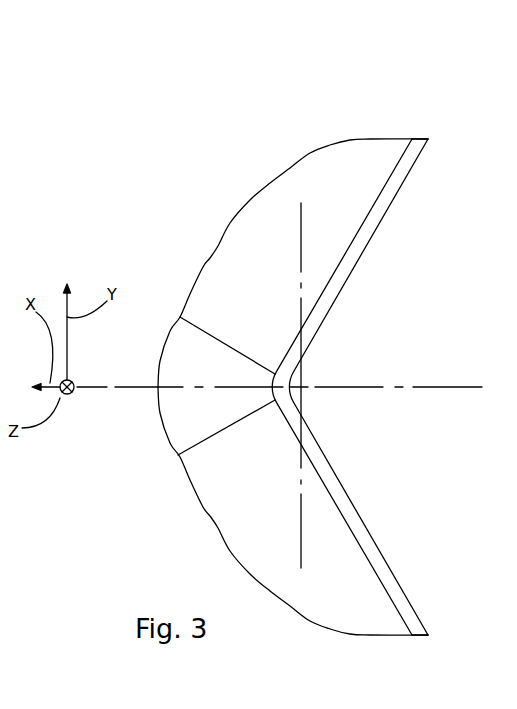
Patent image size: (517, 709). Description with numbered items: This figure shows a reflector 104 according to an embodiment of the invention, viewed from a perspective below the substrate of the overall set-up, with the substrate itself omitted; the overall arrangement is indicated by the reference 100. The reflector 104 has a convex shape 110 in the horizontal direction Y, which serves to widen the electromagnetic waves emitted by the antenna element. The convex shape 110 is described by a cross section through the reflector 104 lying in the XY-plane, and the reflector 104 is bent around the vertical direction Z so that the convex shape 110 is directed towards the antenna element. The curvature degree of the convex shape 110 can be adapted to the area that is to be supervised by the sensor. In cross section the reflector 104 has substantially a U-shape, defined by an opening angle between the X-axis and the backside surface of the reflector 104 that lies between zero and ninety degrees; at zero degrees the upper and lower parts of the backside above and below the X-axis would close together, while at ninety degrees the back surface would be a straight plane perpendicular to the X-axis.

The optical element 100 is at (257, 387).
The reflector 104 is at (367, 245).
The convex shape 110 is at (349, 364).